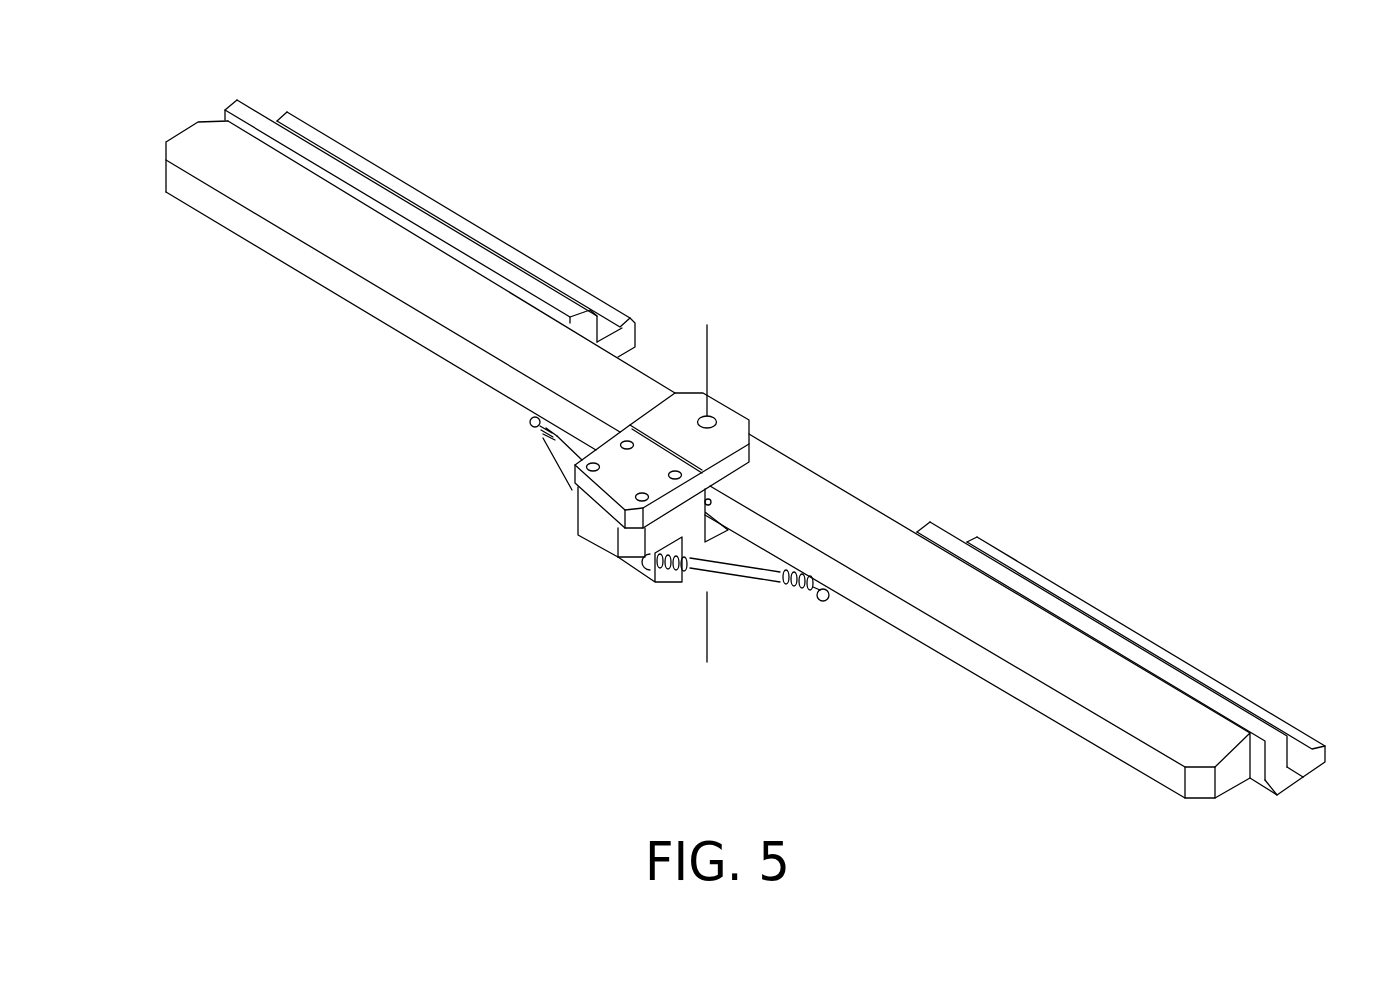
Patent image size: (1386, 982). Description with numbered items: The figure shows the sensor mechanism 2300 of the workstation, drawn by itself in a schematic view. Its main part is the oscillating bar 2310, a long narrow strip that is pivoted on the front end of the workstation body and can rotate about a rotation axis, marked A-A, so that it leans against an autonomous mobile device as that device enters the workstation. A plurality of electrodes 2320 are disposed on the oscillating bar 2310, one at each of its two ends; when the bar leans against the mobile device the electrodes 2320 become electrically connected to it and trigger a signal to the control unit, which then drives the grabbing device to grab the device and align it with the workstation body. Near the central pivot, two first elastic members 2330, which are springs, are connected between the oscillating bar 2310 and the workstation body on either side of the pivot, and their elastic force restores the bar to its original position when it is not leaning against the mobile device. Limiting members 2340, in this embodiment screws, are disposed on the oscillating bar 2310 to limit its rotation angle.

The sensor mechanism 2300 is at (918, 657).
The oscillating bar 2310 is at (408, 315).
The electrodes 2320 is at (413, 193).
The first elastic members 2330 is at (575, 461).
The limiting members 2340 is at (752, 517).